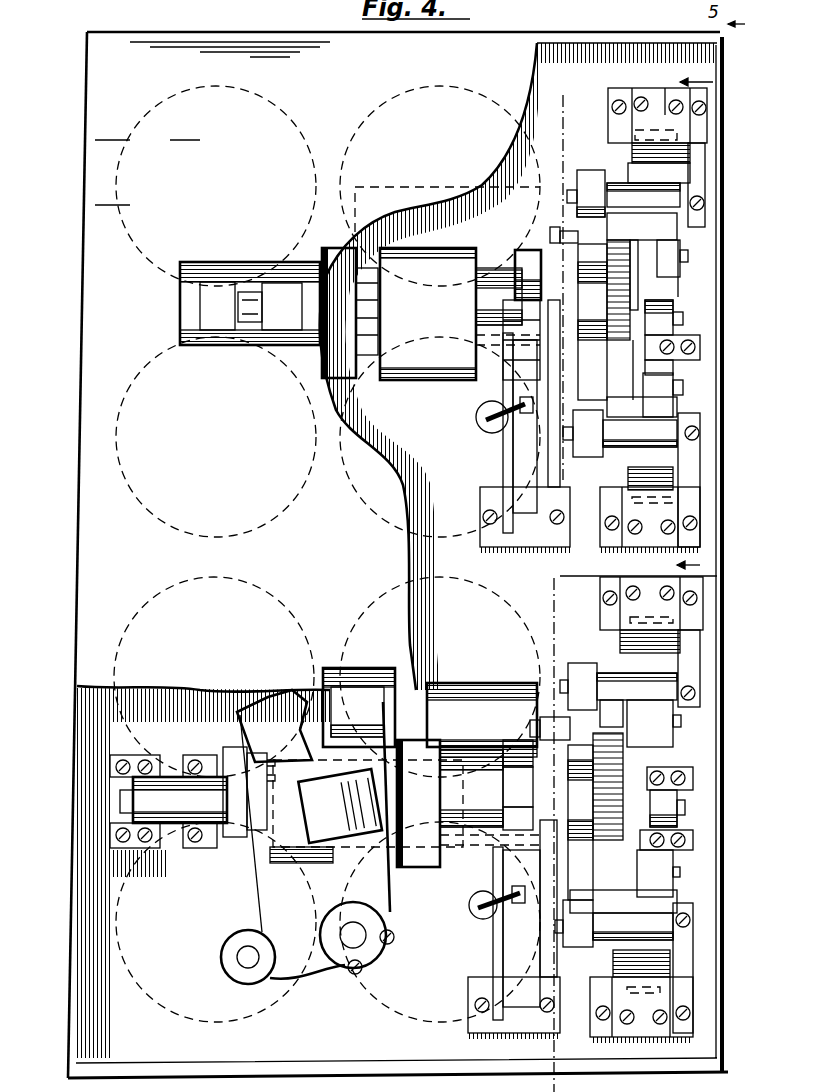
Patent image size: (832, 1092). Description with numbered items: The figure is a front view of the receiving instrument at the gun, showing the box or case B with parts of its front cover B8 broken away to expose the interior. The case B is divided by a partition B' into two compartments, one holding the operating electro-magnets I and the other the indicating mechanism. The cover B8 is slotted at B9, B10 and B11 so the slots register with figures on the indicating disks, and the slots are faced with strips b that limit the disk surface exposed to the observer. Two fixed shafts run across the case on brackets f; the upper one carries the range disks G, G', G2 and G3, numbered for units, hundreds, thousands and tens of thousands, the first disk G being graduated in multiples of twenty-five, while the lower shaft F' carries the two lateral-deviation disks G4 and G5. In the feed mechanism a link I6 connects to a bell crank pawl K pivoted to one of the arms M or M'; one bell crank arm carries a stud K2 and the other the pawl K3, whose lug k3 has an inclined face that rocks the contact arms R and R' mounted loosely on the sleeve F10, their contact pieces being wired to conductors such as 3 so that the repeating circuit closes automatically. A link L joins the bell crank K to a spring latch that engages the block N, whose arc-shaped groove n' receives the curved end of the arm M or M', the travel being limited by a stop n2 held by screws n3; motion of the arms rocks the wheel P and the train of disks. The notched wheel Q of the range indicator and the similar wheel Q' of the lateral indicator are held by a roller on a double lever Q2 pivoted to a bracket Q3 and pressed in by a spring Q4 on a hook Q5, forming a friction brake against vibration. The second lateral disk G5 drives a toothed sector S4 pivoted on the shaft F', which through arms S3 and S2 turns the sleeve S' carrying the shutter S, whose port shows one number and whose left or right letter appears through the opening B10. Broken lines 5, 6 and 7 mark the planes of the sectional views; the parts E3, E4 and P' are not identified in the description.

The box or case B is at (398, 555).
The partition B' is at (519, 574).
The front cover B8 is at (430, 366).
The slot B9 is at (182, 288).
The slot or opening B10 is at (323, 683).
The slot B11 is at (368, 827).
The electro-magnet I is at (327, 561).
The link I6 is at (589, 173).
The first indicating disk G is at (428, 304).
The second indicating disk G' is at (335, 289).
The indicating disk G2 is at (268, 275).
The indicating disk G3 is at (215, 298).
The lateral deviation disk G4 is at (413, 877).
The lateral deviation disk G5 is at (287, 870).
The strip b is at (208, 278).
The shaft tube E3 is at (407, 212).
The shaft E4 is at (555, 232).
The lower fixed shaft F' is at (394, 571).
The sleeve F10 is at (481, 547).
The bracket f is at (673, 330).
The notched wheel Q is at (520, 263).
The notched wheel Q' is at (510, 772).
The double lever Q2 is at (545, 457).
The bracket Q3 is at (522, 510).
The spring Q4 is at (507, 447).
The hook Q5 is at (482, 422).
The arm R is at (577, 572).
The arm R' is at (546, 593).
The lug k3 is at (593, 232).
The bell crank pawl K is at (620, 213).
The stud K2 is at (667, 197).
The pawl K3 is at (653, 687).
The link L is at (660, 240).
The arm M is at (697, 493).
The arm M' is at (704, 635).
The block N is at (693, 158).
The arc-shaped groove n' is at (692, 568).
The stop n2 is at (680, 123).
The screw n3 is at (647, 102).
The wheel P is at (691, 347).
The block P' is at (697, 803).
The shutter S is at (284, 834).
The sleeve S' is at (358, 952).
The arm S2 is at (238, 950).
The arm S3 is at (253, 885).
The toothed sector S4 is at (249, 792).
The conductor 3 is at (390, 790).
The section line 5 is at (639, 828).
The section line 6 is at (683, 319).
The section line 7 is at (561, 287).